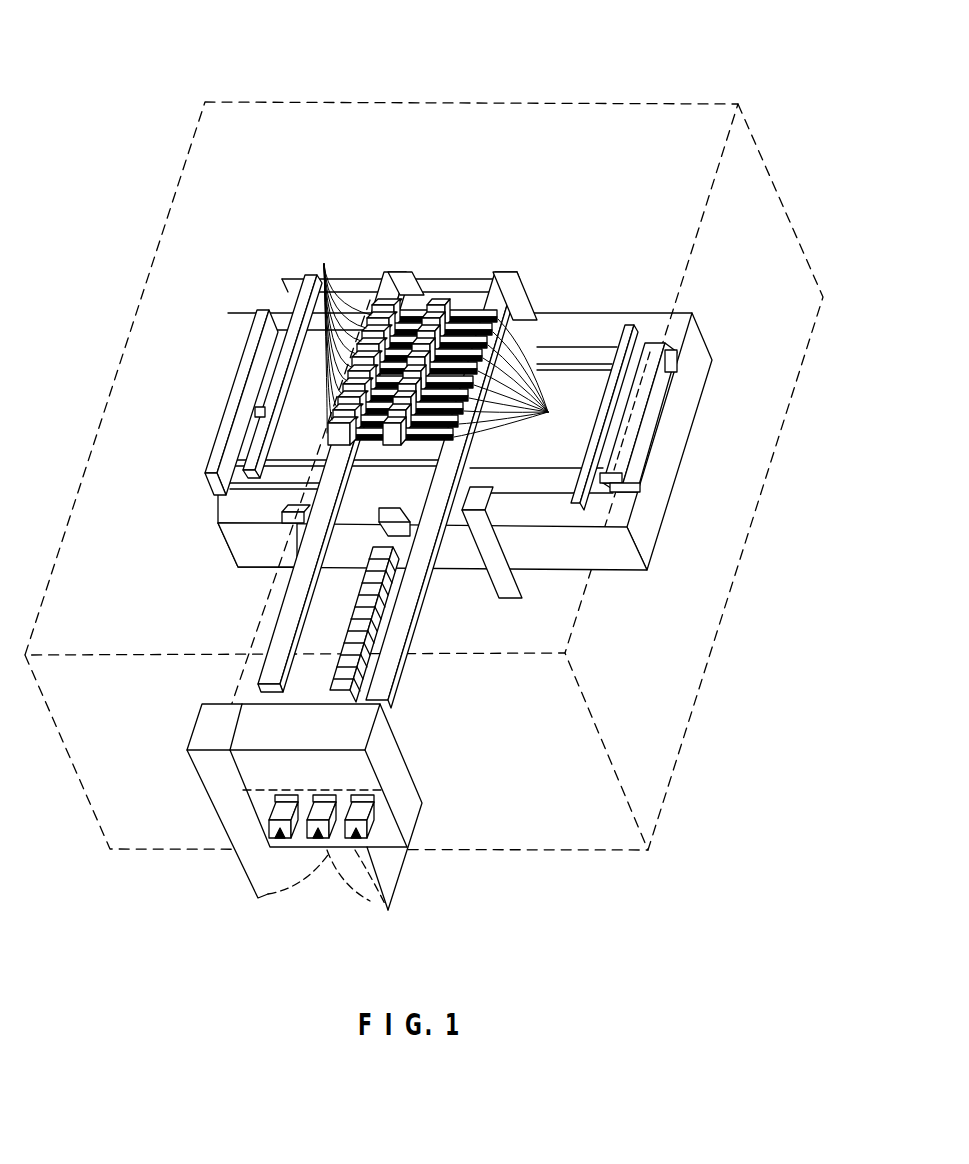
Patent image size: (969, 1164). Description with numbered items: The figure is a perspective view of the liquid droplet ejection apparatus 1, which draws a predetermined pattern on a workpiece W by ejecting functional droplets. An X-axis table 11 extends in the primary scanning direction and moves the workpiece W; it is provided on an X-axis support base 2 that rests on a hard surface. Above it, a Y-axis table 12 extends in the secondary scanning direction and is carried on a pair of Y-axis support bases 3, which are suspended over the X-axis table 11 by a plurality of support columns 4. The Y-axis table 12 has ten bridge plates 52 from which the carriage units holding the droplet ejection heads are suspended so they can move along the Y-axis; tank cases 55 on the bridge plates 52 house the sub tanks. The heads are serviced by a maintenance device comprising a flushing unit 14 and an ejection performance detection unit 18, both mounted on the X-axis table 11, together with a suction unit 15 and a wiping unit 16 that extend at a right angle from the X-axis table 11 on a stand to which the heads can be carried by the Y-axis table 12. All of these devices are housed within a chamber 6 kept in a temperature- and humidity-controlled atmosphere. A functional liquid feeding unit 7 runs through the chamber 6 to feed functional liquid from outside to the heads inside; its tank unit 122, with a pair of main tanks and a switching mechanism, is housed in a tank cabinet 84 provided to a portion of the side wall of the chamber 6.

The liquid droplet ejection apparatus 1 is at (560, 76).
The X-axis support base 2 is at (672, 462).
The Y-axis support bases 3 is at (402, 270).
The support columns 4 is at (293, 547).
The chamber 6 is at (70, 496).
The functional liquid feeding unit 7 is at (355, 463).
The X-axis table 11 is at (450, 388).
The Y-axis table 12 is at (447, 244).
The flushing unit 14 is at (661, 330).
The suction unit 15 is at (339, 590).
The wiping unit 16 is at (395, 490).
The ejection performance detection unit 18 is at (618, 327).
The bridge plates 52 is at (548, 412).
The tank cases 55 is at (324, 265).
The tank cabinet 84 is at (326, 832).
The tank unit 122 is at (357, 840).
The workpiece W is at (260, 355).